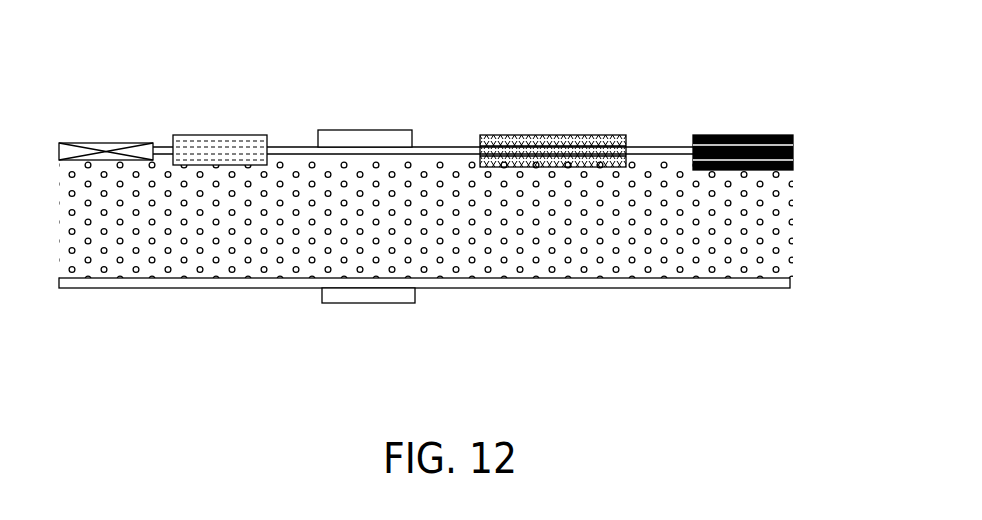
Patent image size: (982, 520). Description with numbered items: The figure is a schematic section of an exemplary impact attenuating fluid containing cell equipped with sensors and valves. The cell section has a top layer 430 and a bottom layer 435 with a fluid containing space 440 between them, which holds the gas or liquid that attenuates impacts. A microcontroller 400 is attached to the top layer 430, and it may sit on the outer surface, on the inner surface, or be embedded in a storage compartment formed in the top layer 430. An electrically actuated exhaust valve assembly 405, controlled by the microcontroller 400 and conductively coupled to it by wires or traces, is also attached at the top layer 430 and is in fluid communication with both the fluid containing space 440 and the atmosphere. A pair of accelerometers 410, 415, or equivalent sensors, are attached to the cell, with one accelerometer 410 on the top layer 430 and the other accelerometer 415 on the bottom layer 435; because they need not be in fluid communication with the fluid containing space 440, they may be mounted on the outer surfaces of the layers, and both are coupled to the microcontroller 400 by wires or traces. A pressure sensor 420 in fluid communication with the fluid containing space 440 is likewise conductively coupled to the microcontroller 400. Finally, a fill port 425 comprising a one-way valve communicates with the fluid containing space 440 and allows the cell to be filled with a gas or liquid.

The microcontroller 400 is at (755, 135).
The exhaust valve assembly 405 is at (547, 137).
The accelerometer 410 is at (363, 130).
The accelerometer 415 is at (375, 303).
The pressure sensor 420 is at (220, 135).
The fill port 425 is at (100, 143).
The top layer 430 is at (442, 147).
The bottom layer 435 is at (567, 282).
The fluid containing space 440 is at (452, 228).